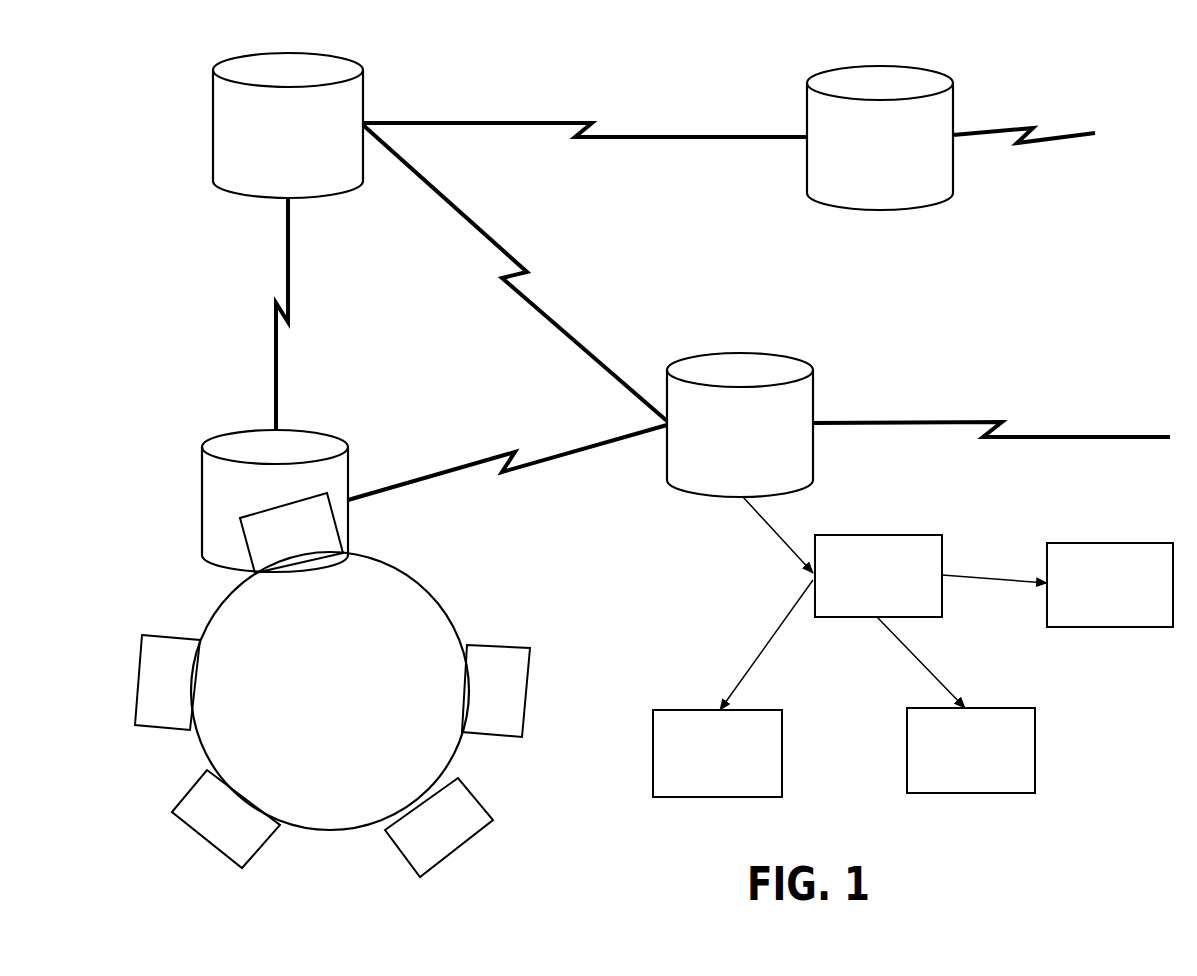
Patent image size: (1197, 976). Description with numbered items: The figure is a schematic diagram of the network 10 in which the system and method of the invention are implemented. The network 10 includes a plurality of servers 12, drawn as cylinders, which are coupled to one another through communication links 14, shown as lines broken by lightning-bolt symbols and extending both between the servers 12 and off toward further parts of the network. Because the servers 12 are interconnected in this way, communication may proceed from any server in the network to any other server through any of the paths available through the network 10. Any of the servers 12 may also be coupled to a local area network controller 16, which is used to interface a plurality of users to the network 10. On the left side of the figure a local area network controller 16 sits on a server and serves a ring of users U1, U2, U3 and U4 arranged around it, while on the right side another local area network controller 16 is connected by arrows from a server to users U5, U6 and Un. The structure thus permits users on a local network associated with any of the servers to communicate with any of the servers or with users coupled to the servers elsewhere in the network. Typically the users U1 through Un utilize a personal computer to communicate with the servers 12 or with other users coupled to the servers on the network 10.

The network 10 is at (128, 447).
The servers 12 is at (360, 63).
The communication links 14 is at (592, 138).
The local area network controller 16 is at (337, 523).
The user U1 is at (132, 658).
The user U2 is at (203, 842).
The user U3 is at (477, 802).
The user U4 is at (535, 672).
The user U5 is at (782, 752).
The user U6 is at (940, 793).
The user Un is at (1117, 627).